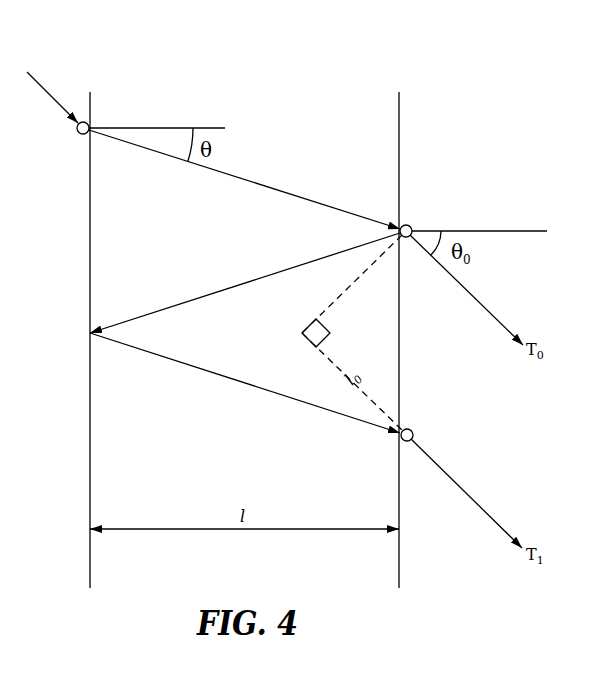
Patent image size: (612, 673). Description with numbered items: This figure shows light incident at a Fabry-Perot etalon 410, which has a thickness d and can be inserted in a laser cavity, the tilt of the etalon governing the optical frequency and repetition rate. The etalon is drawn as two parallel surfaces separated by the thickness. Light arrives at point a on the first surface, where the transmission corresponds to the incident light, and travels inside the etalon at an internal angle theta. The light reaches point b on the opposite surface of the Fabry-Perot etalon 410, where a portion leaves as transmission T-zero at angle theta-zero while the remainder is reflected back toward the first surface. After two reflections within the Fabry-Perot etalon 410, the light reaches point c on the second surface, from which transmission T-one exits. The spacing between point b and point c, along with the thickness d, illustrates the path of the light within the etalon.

The Fabry-Perot etalon 410 is at (400, 140).
The point a is at (76, 138).
The point b is at (408, 219).
The point c is at (409, 423).